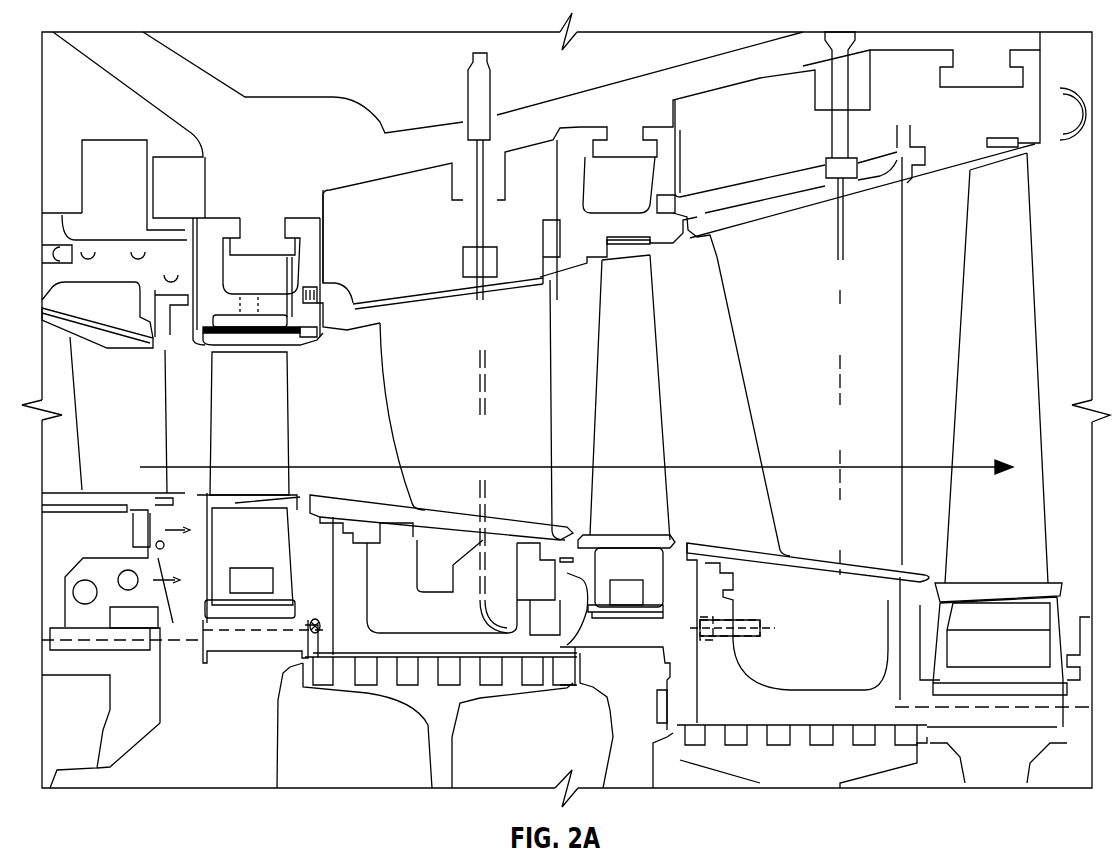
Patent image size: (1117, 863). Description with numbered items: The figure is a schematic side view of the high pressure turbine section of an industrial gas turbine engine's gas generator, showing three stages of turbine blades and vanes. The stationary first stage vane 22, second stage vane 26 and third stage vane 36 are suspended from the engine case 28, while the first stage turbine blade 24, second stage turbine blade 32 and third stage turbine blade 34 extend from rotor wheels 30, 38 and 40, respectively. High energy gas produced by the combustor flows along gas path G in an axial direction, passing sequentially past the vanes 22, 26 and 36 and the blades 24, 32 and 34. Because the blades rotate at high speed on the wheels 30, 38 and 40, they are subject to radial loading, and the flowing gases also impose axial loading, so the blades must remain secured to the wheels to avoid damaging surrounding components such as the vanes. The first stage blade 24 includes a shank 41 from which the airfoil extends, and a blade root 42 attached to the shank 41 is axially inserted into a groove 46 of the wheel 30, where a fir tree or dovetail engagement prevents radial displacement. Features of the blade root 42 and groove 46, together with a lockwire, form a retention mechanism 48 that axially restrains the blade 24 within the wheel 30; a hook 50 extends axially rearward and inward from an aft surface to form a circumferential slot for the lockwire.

The first stage vane 22 is at (140, 392).
The first stage turbine blade 24 is at (270, 390).
The second stage vane 26 is at (418, 402).
The engine case 28 is at (313, 100).
The rotor wheel 30 is at (267, 757).
The second stage turbine blade 32 is at (660, 388).
The third stage turbine blade 34 is at (980, 230).
The third stage vane 36 is at (750, 325).
The rotor wheel 38 is at (620, 735).
The rotor wheel 40 is at (990, 745).
The shank 41 is at (259, 423).
The blade root 42 is at (227, 640).
The groove 46 is at (260, 640).
The retention mechanism 48 is at (328, 630).
The hook 50 is at (330, 625).
The gas path G is at (940, 467).